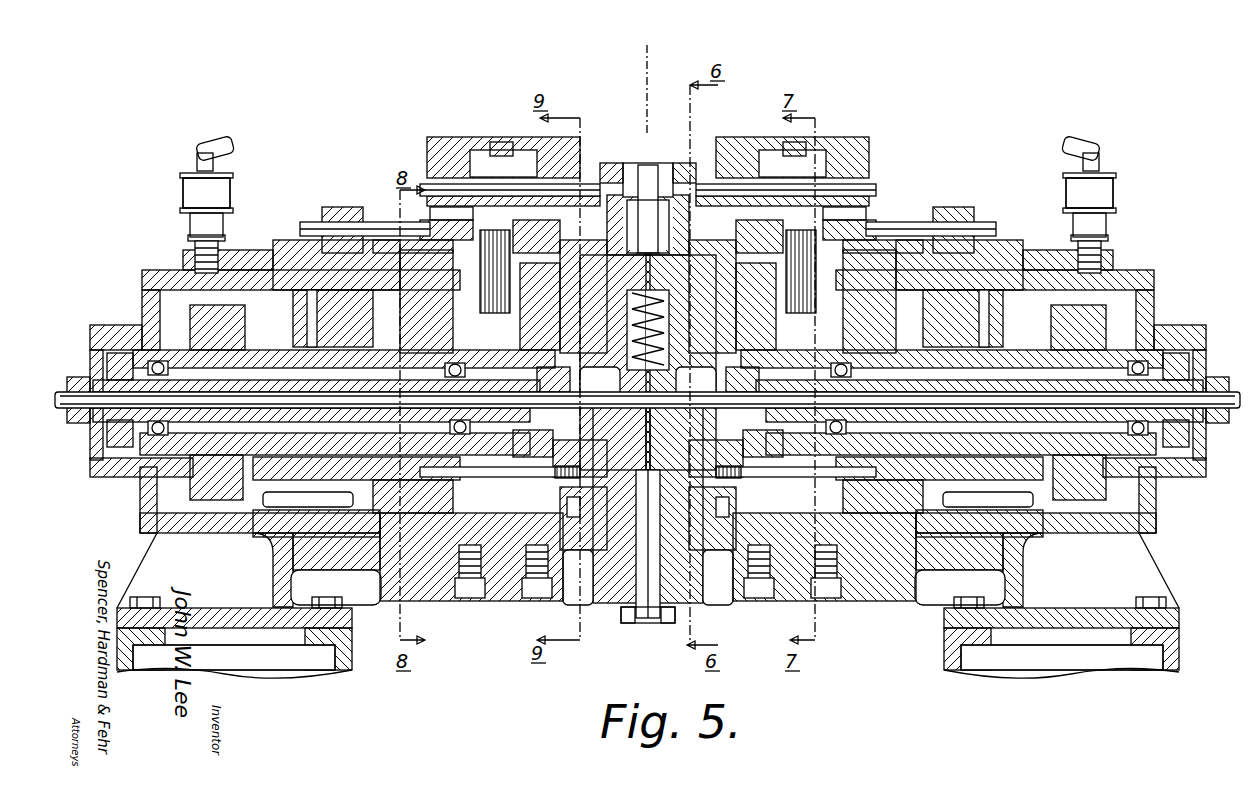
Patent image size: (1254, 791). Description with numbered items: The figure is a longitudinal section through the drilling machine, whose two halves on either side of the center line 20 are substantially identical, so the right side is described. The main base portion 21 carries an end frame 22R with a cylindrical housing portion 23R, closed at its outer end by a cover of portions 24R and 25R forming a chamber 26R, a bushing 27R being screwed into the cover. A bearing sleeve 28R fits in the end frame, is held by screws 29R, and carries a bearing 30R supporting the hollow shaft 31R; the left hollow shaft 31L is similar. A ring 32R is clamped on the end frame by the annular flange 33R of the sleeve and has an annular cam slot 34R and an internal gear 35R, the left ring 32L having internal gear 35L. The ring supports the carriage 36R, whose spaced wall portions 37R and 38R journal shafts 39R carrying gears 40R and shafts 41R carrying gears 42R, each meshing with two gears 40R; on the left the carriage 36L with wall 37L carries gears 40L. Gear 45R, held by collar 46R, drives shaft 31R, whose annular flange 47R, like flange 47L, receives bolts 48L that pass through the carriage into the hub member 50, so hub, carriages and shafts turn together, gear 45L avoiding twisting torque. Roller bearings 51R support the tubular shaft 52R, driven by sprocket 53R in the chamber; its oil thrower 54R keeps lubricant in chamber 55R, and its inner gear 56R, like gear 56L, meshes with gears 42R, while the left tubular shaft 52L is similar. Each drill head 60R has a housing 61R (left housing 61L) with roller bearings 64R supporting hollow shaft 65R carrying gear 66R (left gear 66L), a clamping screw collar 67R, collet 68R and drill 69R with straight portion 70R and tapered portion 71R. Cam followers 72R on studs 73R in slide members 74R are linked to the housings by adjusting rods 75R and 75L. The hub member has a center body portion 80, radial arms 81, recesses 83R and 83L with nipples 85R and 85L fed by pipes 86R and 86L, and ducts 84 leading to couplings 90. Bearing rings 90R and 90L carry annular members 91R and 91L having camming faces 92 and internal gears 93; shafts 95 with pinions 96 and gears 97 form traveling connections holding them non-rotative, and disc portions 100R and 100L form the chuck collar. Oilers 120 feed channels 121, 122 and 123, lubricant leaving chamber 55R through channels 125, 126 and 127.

The center line 20 is at (645, 52).
The main base portion 21 is at (308, 660).
The end frame 22R is at (1005, 615).
The cylindrical housing portion 23R is at (1095, 530).
The cover portion 24R is at (1145, 302).
The cover portion 25R is at (1195, 465).
The chamber 26R is at (1162, 338).
The bushing 27R is at (1222, 375).
The bearing sleeve 28R is at (1010, 508).
The screws 29R is at (1085, 485).
The bearing 30R is at (998, 455).
The hollow shaft 31L is at (275, 445).
The hollow shaft 31R is at (950, 445).
The ring 32L is at (318, 534).
The ring 32R is at (990, 550).
The annular flange 33R is at (905, 520).
The annular cam slot 34R is at (958, 540).
The internal gear 35L is at (400, 548).
The internal gear 35R is at (885, 530).
The carriage 36L is at (440, 560).
The carriage 36R is at (870, 560).
The wall portion 37L is at (572, 570).
The wall portion 37R is at (730, 570).
The wall portion 38R is at (840, 600).
The shaft 39R is at (760, 268).
The gear 40L is at (492, 313).
The gear 40R is at (822, 268).
The shaft 41R is at (765, 478).
The gear 42R is at (815, 483).
The driving gear 45L is at (190, 478).
The gear 45R is at (1090, 488).
The collar 46R is at (1120, 488).
The annular flange 47L is at (437, 368).
The annular flange 47R is at (885, 330).
The bolts 48L is at (567, 452).
The hub member 50 is at (610, 370).
The roller bearing 51R is at (830, 370).
The tubular shaft 52L is at (310, 393).
The tubular shaft 52R is at (1108, 418).
The driving sprocket 53R is at (1180, 350).
The oil thrower 54R is at (1190, 480).
The chamber 55R is at (1130, 505).
The gear 56L is at (528, 318).
The gear 56R is at (840, 415).
The drill head 60R is at (835, 150).
The housing 61L is at (455, 150).
The housing 61R is at (733, 150).
The roller bearing 64R is at (748, 150).
The hollow shaft 65R is at (855, 183).
The gear 66L is at (502, 148).
The gear 66R is at (815, 148).
The clamping screw collar 67R is at (710, 150).
The collet 68R is at (718, 150).
The drill 69R is at (740, 190).
The straight portion 70R is at (640, 170).
The tapered portion 71R is at (652, 163).
The cam follower 72R is at (955, 262).
The stud 73R is at (942, 255).
The slide member 74R is at (960, 220).
The adjusting rod 75R is at (870, 228).
The adjusting rod 75L is at (440, 228).
The center body portion 80 is at (710, 415).
The radial arms 81 is at (660, 565).
The recess 83L is at (560, 372).
The recess 83R is at (724, 375).
The ducts 84 is at (640, 567).
The nipple 85L is at (550, 430).
The nipple 85R is at (712, 395).
The pipe 86L is at (382, 412).
The pipe 86R is at (995, 400).
The coupling 90 is at (645, 625).
The bearing ring 90L is at (575, 535).
The bearing ring 90R is at (718, 540).
The annular member 91L is at (610, 585).
The annular member 91R is at (695, 585).
The internal camming face 92 is at (612, 245).
The internal gear 93 is at (568, 283).
The shafts 95 is at (503, 495).
The pinions 96 is at (565, 505).
The gears 97 is at (420, 508).
The disc portion 100L is at (613, 633).
The disc portion 100R is at (680, 633).
The oilers 120 is at (232, 190).
The channel 121 is at (1040, 268).
The channel 122 is at (1010, 275).
The channel 123 is at (1000, 325).
The channel 125 is at (958, 478).
The channel 126 is at (898, 500).
The channel 127 is at (718, 520).